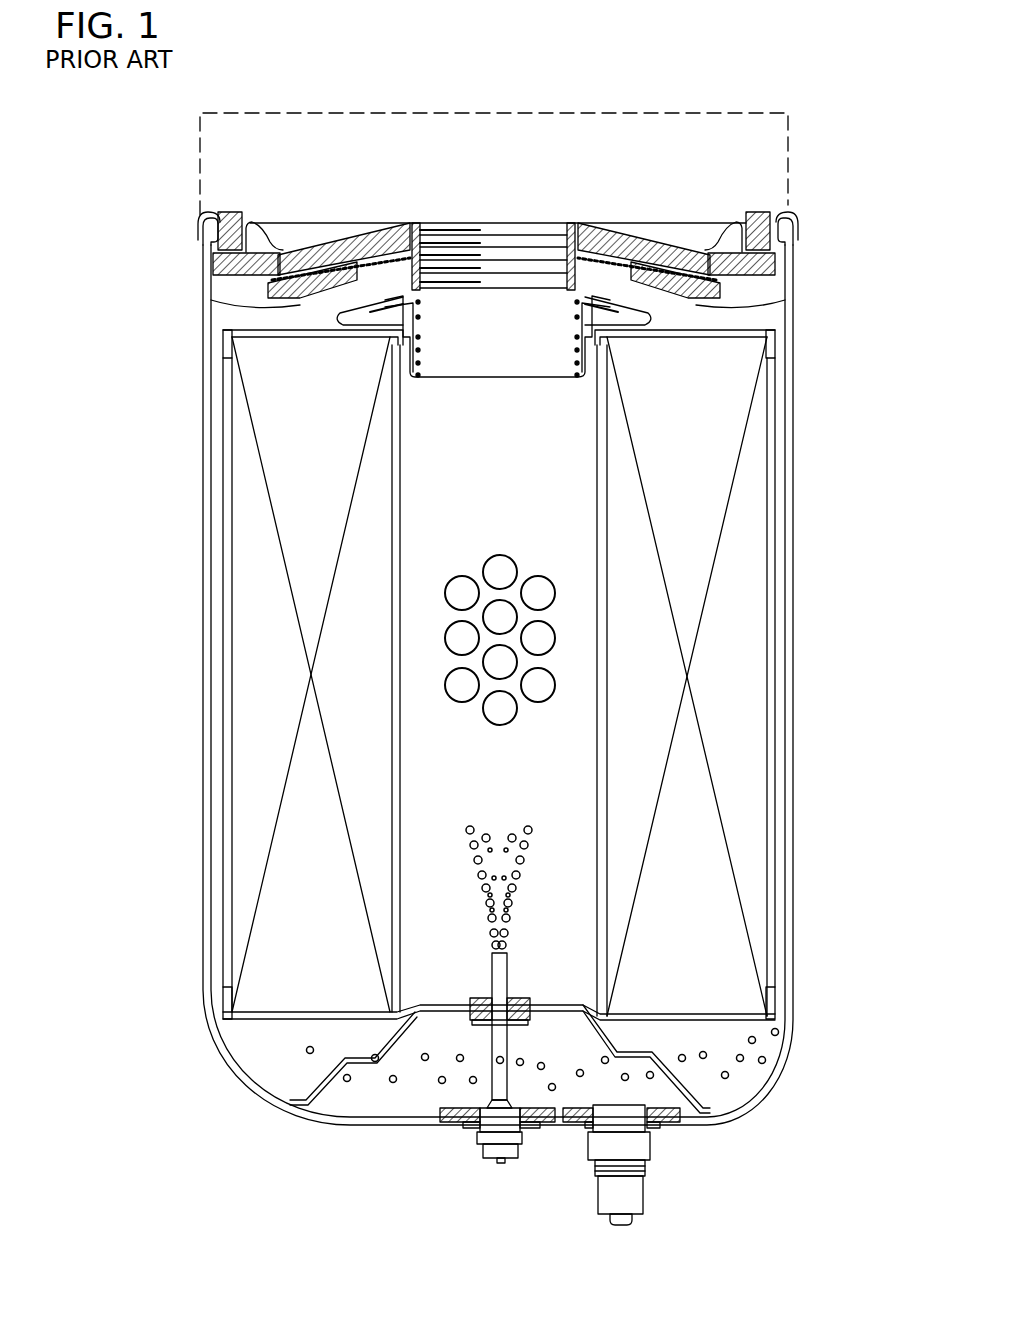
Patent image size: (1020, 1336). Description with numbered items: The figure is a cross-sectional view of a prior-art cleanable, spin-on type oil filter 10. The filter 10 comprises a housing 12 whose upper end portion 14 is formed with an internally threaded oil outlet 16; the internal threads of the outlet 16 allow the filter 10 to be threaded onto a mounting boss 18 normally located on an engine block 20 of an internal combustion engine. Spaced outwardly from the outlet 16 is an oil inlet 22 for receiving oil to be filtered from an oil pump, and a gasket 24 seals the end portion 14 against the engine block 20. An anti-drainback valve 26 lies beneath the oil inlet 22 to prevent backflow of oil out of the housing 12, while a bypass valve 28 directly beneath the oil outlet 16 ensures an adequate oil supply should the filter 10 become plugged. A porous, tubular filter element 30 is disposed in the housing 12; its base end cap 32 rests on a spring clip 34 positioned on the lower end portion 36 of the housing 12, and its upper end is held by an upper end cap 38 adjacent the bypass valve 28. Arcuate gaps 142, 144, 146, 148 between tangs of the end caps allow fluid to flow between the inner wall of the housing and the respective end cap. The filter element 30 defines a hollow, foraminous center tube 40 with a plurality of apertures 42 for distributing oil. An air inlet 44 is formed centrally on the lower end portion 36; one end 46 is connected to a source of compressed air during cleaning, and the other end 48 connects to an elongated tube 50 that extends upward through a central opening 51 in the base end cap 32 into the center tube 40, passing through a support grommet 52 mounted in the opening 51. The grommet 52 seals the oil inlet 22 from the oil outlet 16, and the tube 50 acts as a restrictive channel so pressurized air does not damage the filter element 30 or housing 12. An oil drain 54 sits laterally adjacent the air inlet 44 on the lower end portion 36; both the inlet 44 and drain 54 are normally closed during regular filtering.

The oil filter 10 is at (150, 192).
The housing 12 is at (795, 492).
The upper end portion 14 is at (705, 225).
The oil outlet 16 is at (412, 240).
The mounting boss 18 is at (582, 258).
The engine block 20 is at (788, 148).
The oil inlet 22 is at (280, 262).
The gasket 24 is at (232, 212).
The anti-drainback valve 26 is at (290, 291).
The bypass valve 28 is at (473, 375).
The filter element 30 is at (270, 425).
The base end cap 32 is at (708, 1014).
The spring clip 34 is at (745, 1107).
The lower end portion 36 is at (275, 1100).
The upper end cap 38 is at (268, 328).
The center tube 40 is at (600, 467).
The apertures 42 is at (492, 563).
The air inlet 44 is at (492, 1150).
The end of air inlet 46 is at (498, 1162).
The other end of air inlet 48 is at (515, 1103).
The elongated tube 50 is at (493, 980).
The central opening 51 is at (475, 1022).
The support grommet 52 is at (517, 1000).
The oil drain 54 is at (643, 1207).
The arcuate gap 142 is at (783, 344).
The arcuate gap 144 is at (217, 351).
The arcuate gap 146 is at (792, 1040).
The arcuate gap 148 is at (220, 1000).